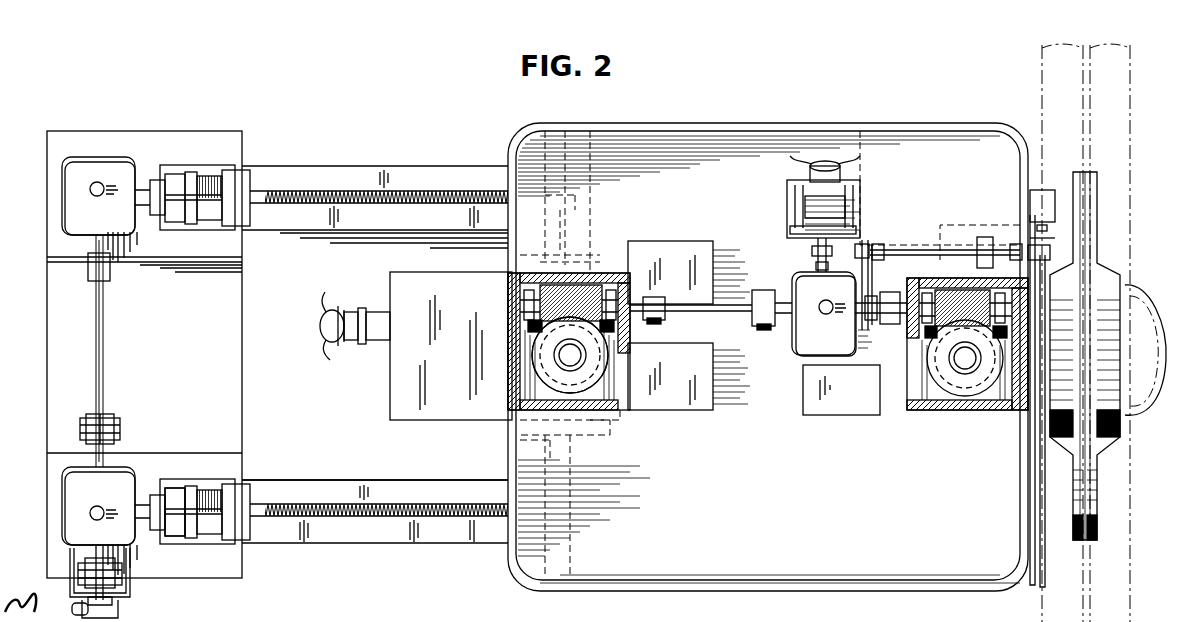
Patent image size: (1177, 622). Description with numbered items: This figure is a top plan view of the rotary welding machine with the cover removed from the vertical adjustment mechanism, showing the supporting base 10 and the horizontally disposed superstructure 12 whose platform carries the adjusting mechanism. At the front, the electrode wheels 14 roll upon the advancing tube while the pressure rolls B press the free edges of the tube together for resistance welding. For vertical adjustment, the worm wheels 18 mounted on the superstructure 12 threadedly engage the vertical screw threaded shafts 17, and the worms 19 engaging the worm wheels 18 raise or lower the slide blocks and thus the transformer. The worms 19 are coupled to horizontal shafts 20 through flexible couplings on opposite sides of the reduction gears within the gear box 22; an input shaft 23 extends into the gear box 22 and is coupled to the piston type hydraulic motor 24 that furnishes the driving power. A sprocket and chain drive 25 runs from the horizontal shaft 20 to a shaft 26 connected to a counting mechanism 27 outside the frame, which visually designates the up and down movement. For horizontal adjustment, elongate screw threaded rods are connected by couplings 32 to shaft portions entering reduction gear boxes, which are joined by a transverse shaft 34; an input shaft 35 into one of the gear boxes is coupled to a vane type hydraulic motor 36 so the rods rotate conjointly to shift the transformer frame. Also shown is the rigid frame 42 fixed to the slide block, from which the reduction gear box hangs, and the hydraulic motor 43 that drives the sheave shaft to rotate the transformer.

The supporting base 10 is at (433, 538).
The superstructure 12 is at (737, 541).
The electrode wheels 14 is at (1094, 540).
The screw threaded shafts 17 is at (965, 385).
The worm wheels 18 is at (972, 398).
The worms 19 is at (972, 292).
The horizontal shafts 20 is at (740, 302).
The gear box 22 is at (827, 339).
The input shaft 23 is at (816, 266).
The hydraulic motor 24 is at (815, 210).
The sprocket and chain drive 25 is at (862, 278).
The shaft 26 is at (905, 252).
The counting mechanism 27 is at (1045, 200).
The couplings 32 is at (174, 496).
The transverse shaft 34 is at (112, 388).
The input shaft 35 is at (72, 555).
The hydraulic motor 36 is at (120, 618).
The rigid frame 42 is at (467, 300).
The hydraulic motor 43 is at (347, 318).
The pressure rolls B is at (1155, 418).